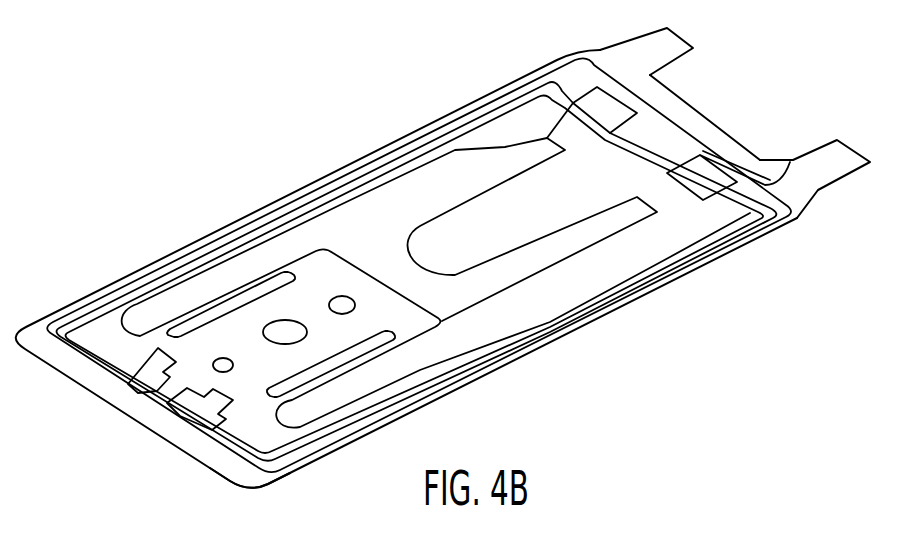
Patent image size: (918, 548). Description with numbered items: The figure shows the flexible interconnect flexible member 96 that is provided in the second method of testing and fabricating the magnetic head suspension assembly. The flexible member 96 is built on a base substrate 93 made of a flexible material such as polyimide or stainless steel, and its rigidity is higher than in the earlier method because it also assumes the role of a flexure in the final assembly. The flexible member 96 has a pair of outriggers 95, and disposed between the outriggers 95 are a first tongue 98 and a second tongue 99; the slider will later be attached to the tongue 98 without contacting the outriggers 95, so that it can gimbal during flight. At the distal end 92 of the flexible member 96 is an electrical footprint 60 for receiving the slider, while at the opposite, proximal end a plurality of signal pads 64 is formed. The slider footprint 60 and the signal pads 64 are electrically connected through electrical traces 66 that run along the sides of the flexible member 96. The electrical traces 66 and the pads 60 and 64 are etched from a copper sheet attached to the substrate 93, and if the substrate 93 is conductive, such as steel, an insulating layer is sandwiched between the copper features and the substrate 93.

The flexible member 96 is at (358, 104).
The distal end 92 is at (70, 387).
The base substrate 93 is at (241, 488).
The signal pads 64 is at (599, 110).
The outriggers 95 is at (257, 207).
The electrical traces 66 is at (457, 122).
The first tongue 98 is at (322, 267).
The second tongue 99 is at (480, 258).
The electrical footprint 60 is at (172, 378).